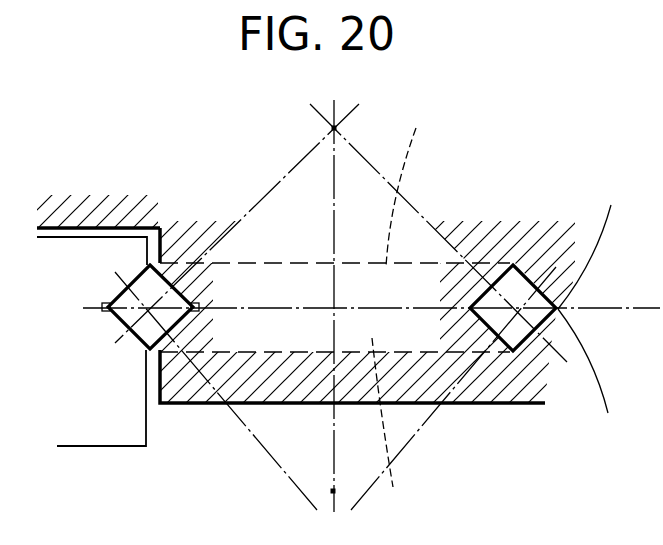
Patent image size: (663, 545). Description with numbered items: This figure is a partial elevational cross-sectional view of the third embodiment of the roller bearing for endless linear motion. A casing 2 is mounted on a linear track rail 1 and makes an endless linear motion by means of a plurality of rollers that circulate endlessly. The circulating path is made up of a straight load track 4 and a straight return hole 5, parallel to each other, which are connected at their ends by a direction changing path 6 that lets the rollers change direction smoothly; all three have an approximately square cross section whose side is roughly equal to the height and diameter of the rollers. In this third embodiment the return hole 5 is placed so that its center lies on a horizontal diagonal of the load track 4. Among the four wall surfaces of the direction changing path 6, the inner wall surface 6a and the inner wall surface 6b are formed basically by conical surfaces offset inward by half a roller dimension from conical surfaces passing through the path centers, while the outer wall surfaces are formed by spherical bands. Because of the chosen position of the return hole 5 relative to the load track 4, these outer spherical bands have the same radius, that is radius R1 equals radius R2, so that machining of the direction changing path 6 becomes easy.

The track rail 1 is at (106, 399).
The casing 2 is at (266, 156).
The load track 4 is at (168, 287).
The return hole 5 is at (541, 316).
The direction changing path 6 is at (258, 352).
The inner wall surface 6a is at (429, 185).
The inner wall surface 6b is at (411, 427).
The radius R1 is at (605, 232).
The radius R2 is at (600, 392).